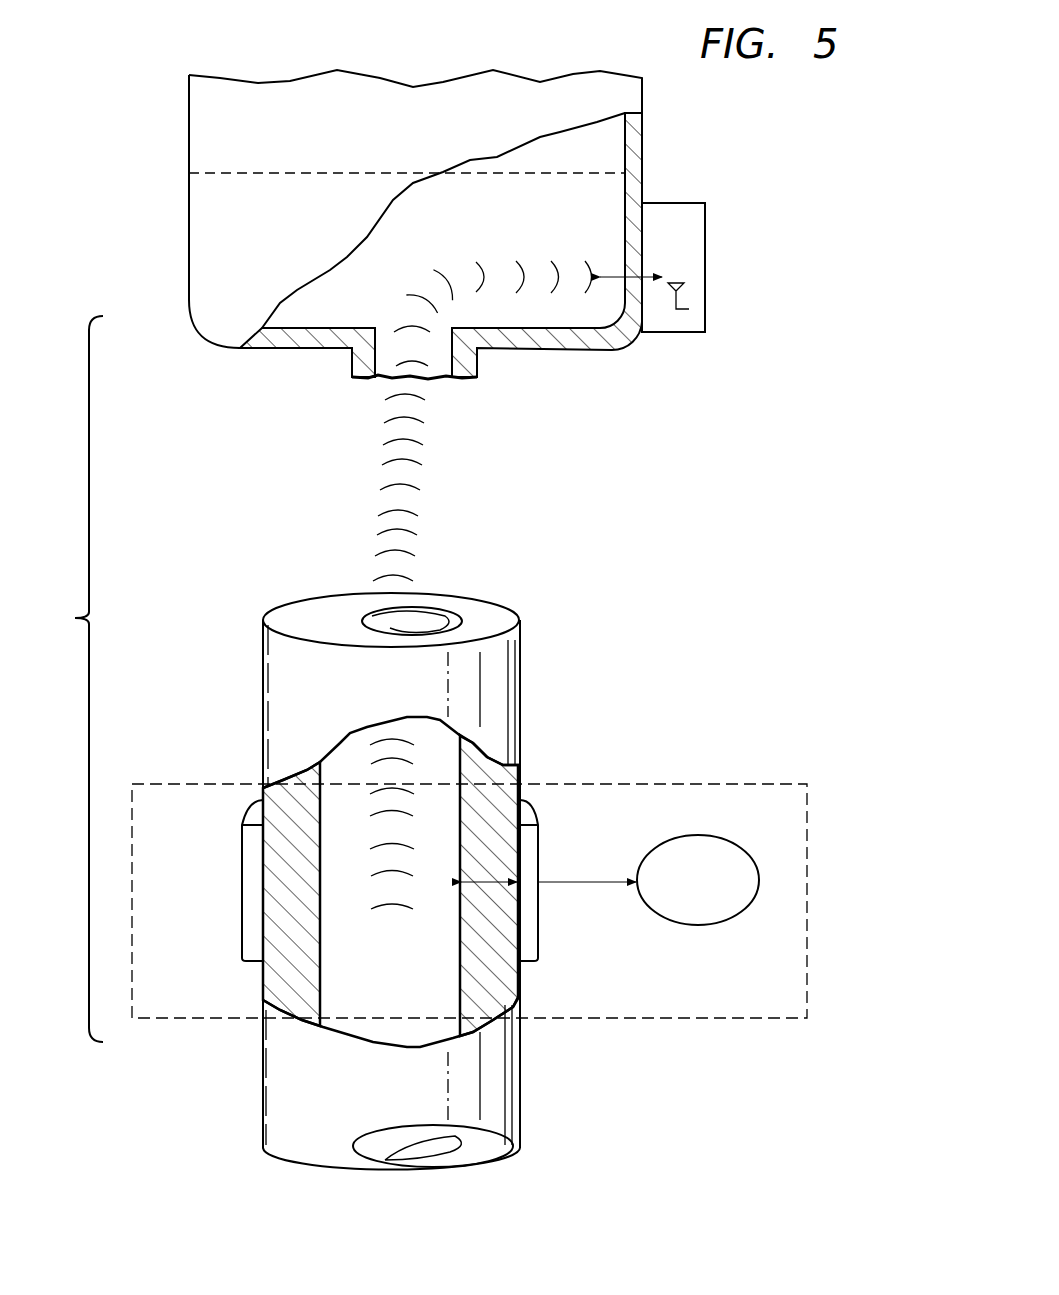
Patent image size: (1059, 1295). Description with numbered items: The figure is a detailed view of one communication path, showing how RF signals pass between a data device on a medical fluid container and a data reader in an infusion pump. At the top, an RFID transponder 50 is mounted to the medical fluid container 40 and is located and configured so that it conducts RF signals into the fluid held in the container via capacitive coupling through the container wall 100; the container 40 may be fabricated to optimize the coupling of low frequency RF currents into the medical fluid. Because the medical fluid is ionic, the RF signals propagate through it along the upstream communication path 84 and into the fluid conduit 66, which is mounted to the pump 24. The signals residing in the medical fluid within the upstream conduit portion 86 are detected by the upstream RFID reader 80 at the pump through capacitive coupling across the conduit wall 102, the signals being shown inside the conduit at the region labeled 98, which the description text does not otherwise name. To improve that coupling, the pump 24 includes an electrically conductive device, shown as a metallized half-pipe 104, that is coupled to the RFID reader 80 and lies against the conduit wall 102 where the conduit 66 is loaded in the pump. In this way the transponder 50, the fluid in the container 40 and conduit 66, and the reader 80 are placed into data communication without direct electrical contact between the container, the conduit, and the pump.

The medical fluid container 40 is at (188, 203).
The RFID transponder 50 is at (708, 265).
The container wall 100 is at (612, 338).
The upstream communication path 84 is at (384, 488).
The upstream conduit portion 86 is at (74, 679).
The fluid conduit 66 is at (262, 690).
The bore 98 is at (440, 770).
The pump 24 is at (672, 784).
The metallized half-pipe 104 is at (242, 905).
The conduit wall 102 is at (286, 992).
The RFID reader 80 is at (706, 925).